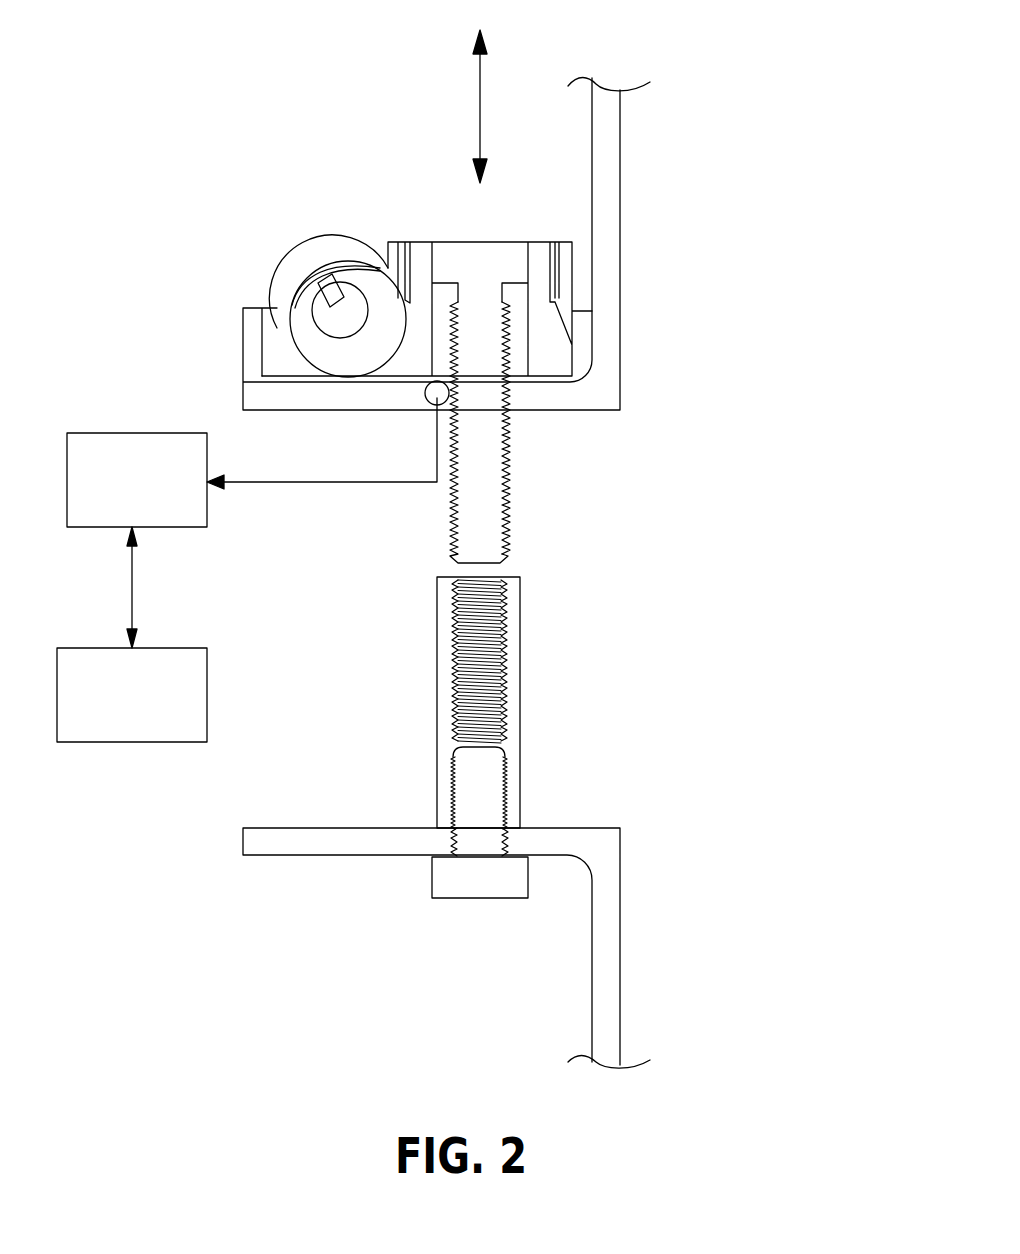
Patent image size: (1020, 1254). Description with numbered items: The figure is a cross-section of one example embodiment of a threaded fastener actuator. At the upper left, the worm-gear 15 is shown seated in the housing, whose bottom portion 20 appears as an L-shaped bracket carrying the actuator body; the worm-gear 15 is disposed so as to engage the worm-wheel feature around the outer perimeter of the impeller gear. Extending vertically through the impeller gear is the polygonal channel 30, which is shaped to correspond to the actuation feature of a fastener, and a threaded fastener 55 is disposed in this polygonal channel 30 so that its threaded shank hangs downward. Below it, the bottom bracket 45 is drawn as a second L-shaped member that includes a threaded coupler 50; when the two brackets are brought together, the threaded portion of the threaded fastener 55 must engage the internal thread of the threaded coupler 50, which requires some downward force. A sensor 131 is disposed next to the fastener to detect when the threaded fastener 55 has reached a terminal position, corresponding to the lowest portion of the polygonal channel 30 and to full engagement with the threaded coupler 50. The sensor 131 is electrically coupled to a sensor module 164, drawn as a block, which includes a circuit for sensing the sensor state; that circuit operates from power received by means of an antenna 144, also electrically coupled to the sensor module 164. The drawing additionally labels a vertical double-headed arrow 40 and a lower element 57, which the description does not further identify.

The worm-gear 15 is at (307, 252).
The bottom portion 20 is at (243, 308).
The polygonal channel 30 is at (510, 352).
The direction of vertical movement 40 is at (481, 123).
The bottom bracket 45 is at (620, 827).
The threaded coupler 50 is at (522, 587).
The threaded fastener 55 is at (503, 497).
The lower nut 57 is at (432, 878).
The sensor 131 is at (430, 407).
The antenna 144 is at (128, 743).
The sensor module 164 is at (73, 527).